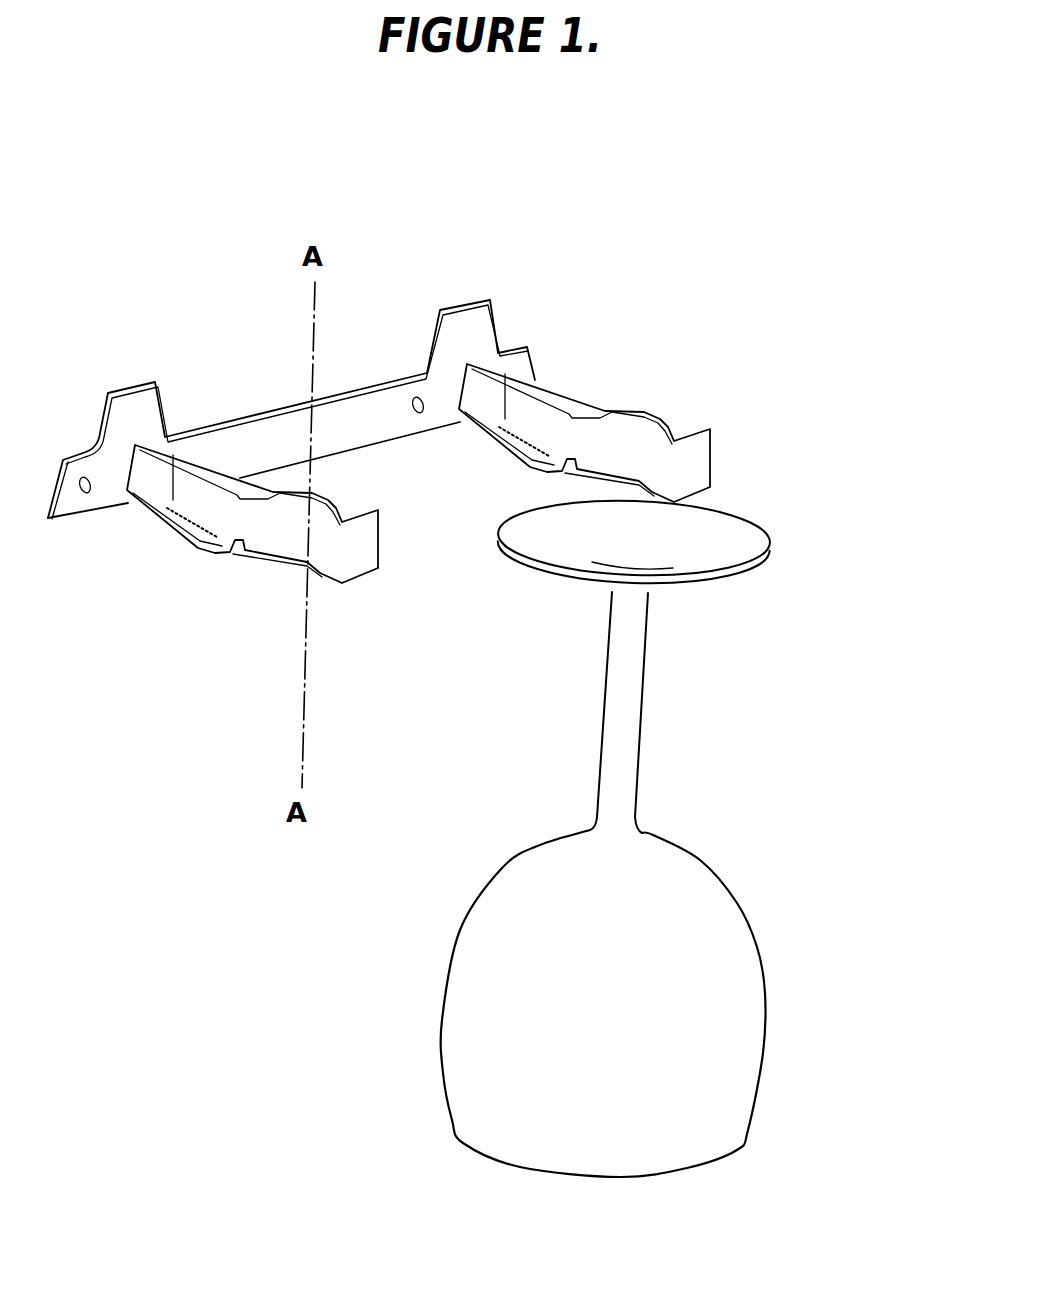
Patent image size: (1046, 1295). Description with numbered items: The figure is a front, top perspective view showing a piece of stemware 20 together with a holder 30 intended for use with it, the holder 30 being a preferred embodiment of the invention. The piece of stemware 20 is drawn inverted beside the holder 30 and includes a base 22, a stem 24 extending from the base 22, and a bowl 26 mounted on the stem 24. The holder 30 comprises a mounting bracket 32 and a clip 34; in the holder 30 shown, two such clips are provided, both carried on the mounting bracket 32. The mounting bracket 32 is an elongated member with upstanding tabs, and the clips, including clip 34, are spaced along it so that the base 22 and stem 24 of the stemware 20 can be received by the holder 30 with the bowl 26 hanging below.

The piece of stemware 20 is at (691, 836).
The base 22 is at (745, 575).
The stem 24 is at (625, 705).
The bowl 26 is at (643, 1003).
The holder 30 is at (646, 371).
The mounting bracket 32 is at (360, 423).
The clip 34 is at (419, 585).